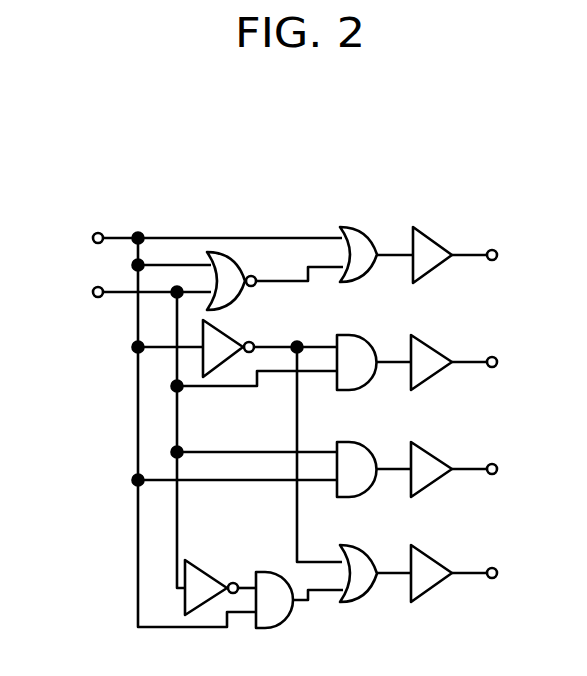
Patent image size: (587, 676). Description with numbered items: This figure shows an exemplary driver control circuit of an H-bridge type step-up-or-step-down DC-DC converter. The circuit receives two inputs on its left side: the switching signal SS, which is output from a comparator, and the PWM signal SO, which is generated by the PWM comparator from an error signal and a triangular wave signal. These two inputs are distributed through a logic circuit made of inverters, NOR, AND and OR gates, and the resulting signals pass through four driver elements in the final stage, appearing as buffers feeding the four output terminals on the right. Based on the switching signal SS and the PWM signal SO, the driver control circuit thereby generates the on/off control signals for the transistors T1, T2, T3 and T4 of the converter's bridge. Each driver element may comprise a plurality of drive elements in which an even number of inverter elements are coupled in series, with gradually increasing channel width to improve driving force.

The switching signal SS is at (191, 427).
The PWM signal SO is at (188, 432).
The transistor T1 is at (379, 268).
The transistor T2 is at (377, 441).
The transistor T3 is at (444, 469).
The transistor T4 is at (368, 586).